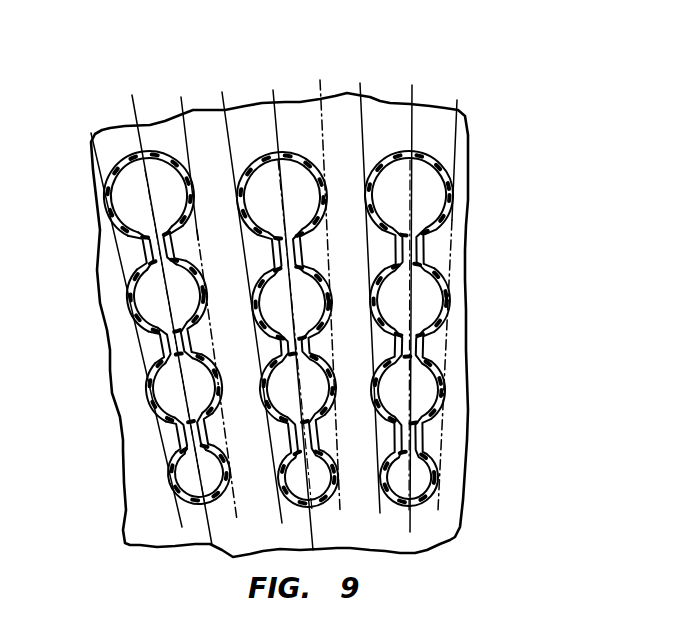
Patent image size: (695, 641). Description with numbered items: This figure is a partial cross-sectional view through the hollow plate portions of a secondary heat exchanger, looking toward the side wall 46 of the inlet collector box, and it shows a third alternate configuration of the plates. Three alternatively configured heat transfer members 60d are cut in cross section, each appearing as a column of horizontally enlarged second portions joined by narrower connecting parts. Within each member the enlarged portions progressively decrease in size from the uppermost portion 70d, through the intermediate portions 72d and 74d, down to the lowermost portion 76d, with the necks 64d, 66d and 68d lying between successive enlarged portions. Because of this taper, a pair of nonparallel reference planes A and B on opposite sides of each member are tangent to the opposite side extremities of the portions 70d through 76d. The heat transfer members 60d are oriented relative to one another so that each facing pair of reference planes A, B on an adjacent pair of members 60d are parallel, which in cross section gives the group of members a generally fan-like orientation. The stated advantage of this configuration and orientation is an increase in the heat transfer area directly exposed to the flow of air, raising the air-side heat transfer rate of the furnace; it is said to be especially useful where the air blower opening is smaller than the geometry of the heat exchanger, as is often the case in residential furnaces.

The side wall 46 is at (112, 338).
The heat transfer member 60d is at (150, 140).
The uppermost portion 70d is at (105, 203).
The first neck portion 64d is at (145, 255).
The second circular hole portion 72d is at (128, 305).
The second neck portion 66d is at (155, 361).
The third circular hole portion 74d is at (147, 398).
The third neck portion 68d is at (176, 437).
The lowermost portion 76d is at (170, 484).
The reference plane A is at (90, 132).
The reference plane B is at (181, 97).